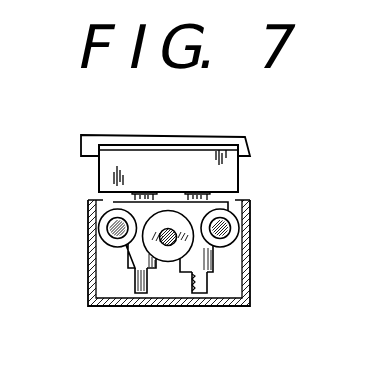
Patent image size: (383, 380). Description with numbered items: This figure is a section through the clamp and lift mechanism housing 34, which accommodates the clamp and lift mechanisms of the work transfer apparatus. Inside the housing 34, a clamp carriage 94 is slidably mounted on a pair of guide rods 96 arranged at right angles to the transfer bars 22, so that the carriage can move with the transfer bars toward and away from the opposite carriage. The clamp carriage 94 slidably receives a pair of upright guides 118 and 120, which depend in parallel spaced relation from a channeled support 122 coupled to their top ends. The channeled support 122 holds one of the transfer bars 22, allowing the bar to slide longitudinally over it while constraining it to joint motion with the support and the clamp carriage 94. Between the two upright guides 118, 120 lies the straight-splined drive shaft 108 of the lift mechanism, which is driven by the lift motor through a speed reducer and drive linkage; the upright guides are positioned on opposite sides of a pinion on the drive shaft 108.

The transfer bar 22 is at (217, 138).
The channeled support 122 is at (236, 171).
The guide rods 96 is at (99, 229).
The clamp carriage 94 is at (128, 256).
The upright guide 120 is at (146, 291).
The upright guide 118 is at (203, 284).
The drive shaft 108 is at (168, 246).
The housing 34 is at (250, 290).